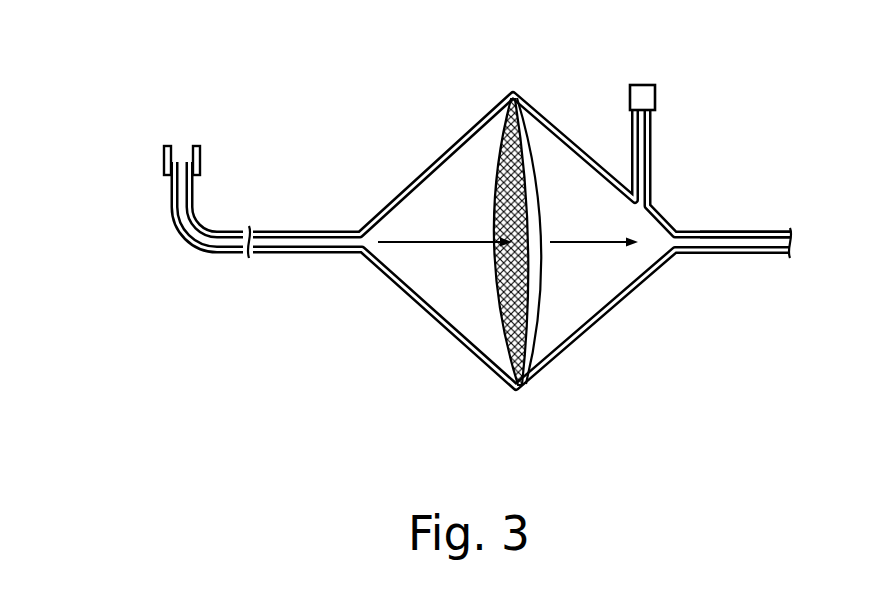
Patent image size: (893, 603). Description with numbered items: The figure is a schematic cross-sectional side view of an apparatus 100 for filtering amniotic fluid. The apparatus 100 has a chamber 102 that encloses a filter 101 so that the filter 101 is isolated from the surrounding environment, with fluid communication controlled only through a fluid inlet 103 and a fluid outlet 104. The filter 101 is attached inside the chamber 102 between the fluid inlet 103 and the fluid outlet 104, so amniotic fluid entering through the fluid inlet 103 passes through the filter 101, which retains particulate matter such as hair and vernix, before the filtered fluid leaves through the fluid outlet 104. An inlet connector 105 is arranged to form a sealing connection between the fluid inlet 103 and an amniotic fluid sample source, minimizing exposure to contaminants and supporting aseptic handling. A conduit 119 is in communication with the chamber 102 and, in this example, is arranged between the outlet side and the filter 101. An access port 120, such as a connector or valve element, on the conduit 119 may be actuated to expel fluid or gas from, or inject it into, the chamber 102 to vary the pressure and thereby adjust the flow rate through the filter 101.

The apparatus 100 is at (154, 40).
The filter 101 is at (507, 97).
The chamber 102 is at (450, 147).
The fluid inlet 103 is at (355, 243).
The fluid outlet 104 is at (692, 243).
The inlet connector 105 is at (187, 270).
The conduit 119 is at (642, 142).
The access port 120 is at (643, 85).